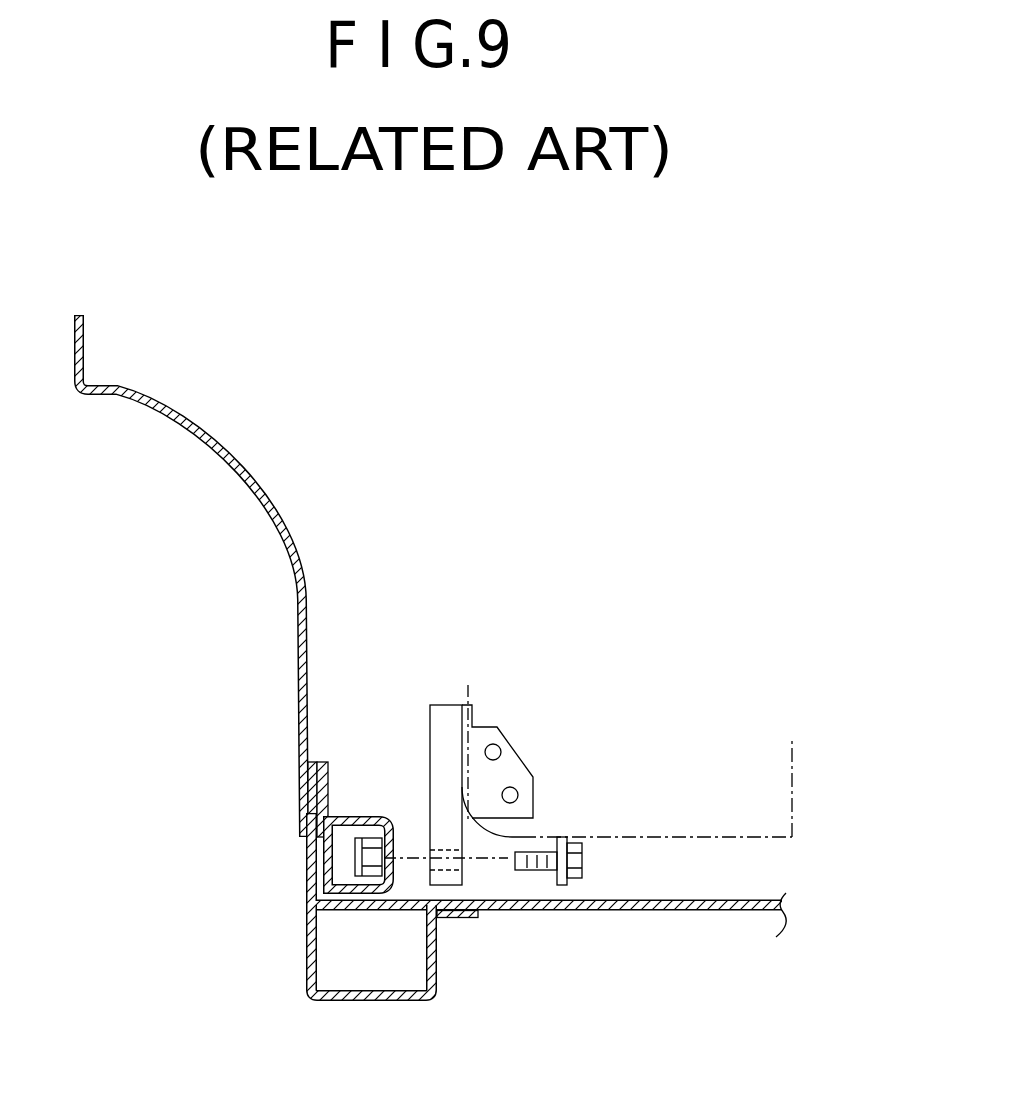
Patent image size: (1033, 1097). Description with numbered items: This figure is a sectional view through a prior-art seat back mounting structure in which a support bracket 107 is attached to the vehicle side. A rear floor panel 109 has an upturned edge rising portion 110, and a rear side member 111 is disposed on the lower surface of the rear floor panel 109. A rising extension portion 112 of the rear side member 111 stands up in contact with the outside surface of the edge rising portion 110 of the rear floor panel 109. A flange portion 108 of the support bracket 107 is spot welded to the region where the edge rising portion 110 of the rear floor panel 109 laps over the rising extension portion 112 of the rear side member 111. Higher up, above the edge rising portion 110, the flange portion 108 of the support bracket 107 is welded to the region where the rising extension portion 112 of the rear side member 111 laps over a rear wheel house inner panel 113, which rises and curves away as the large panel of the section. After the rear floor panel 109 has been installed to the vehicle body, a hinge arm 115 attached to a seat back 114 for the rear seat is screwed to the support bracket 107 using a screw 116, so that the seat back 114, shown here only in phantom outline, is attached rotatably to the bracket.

The support bracket 107 is at (360, 817).
The flange portion 108 is at (328, 763).
The rear floor panel 109 is at (743, 902).
The edge rising portion 110 is at (322, 877).
The rear side member 111 is at (437, 968).
The rising extension portion 112 is at (312, 762).
The rear wheel house inner panel 113 is at (222, 433).
The seat back 114 is at (793, 806).
The hinge arm 115 is at (496, 724).
The screw 116 is at (584, 860).